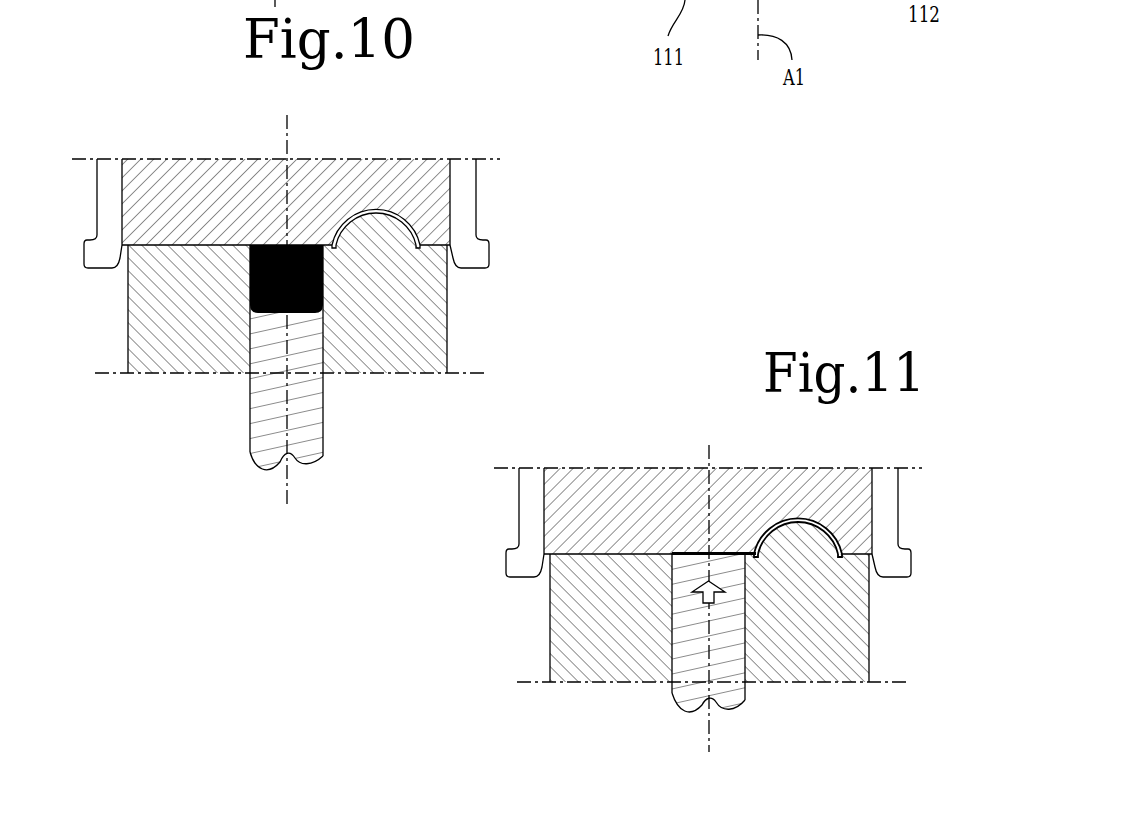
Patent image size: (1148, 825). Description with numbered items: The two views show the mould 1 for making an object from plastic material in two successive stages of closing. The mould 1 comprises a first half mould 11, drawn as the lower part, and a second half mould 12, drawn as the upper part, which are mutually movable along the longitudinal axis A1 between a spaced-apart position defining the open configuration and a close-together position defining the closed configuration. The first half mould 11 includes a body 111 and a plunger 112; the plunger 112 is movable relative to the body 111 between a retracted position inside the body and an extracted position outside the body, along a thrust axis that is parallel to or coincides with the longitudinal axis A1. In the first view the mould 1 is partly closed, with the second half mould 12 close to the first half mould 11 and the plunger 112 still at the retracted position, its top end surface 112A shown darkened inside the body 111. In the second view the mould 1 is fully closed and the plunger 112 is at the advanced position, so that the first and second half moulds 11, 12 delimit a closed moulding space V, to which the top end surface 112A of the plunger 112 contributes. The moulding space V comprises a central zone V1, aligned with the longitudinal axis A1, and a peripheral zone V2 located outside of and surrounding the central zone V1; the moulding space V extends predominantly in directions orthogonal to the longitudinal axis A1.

In FIG. 10, the mould 1 is at (522, 268).
In FIG. 11, the mould 1 is at (476, 661).
In FIG. 10, the first half mould 11 is at (140, 315).
In FIG. 11, the first half mould 11 is at (658, 636).
In FIG. 11, the body 111 is at (638, 650).
In FIG. 10, the plunger 112 is at (307, 418).
In FIG. 11, the plunger 112 is at (730, 645).
In FIG. 10, the top end surface 112A is at (303, 313).
In FIG. 10, the second half mould 12 is at (180, 175).
In FIG. 11, the second half mould 12 is at (658, 487).
In FIG. 10, the longitudinal axis A1 is at (287, 139).
In FIG. 11, the longitudinal axis A1 is at (709, 732).
In FIG. 11, the moulding space V is at (757, 467).
In FIG. 11, the central zone V1 is at (722, 553).
In FIG. 11, the peripheral zones V2 is at (824, 516).